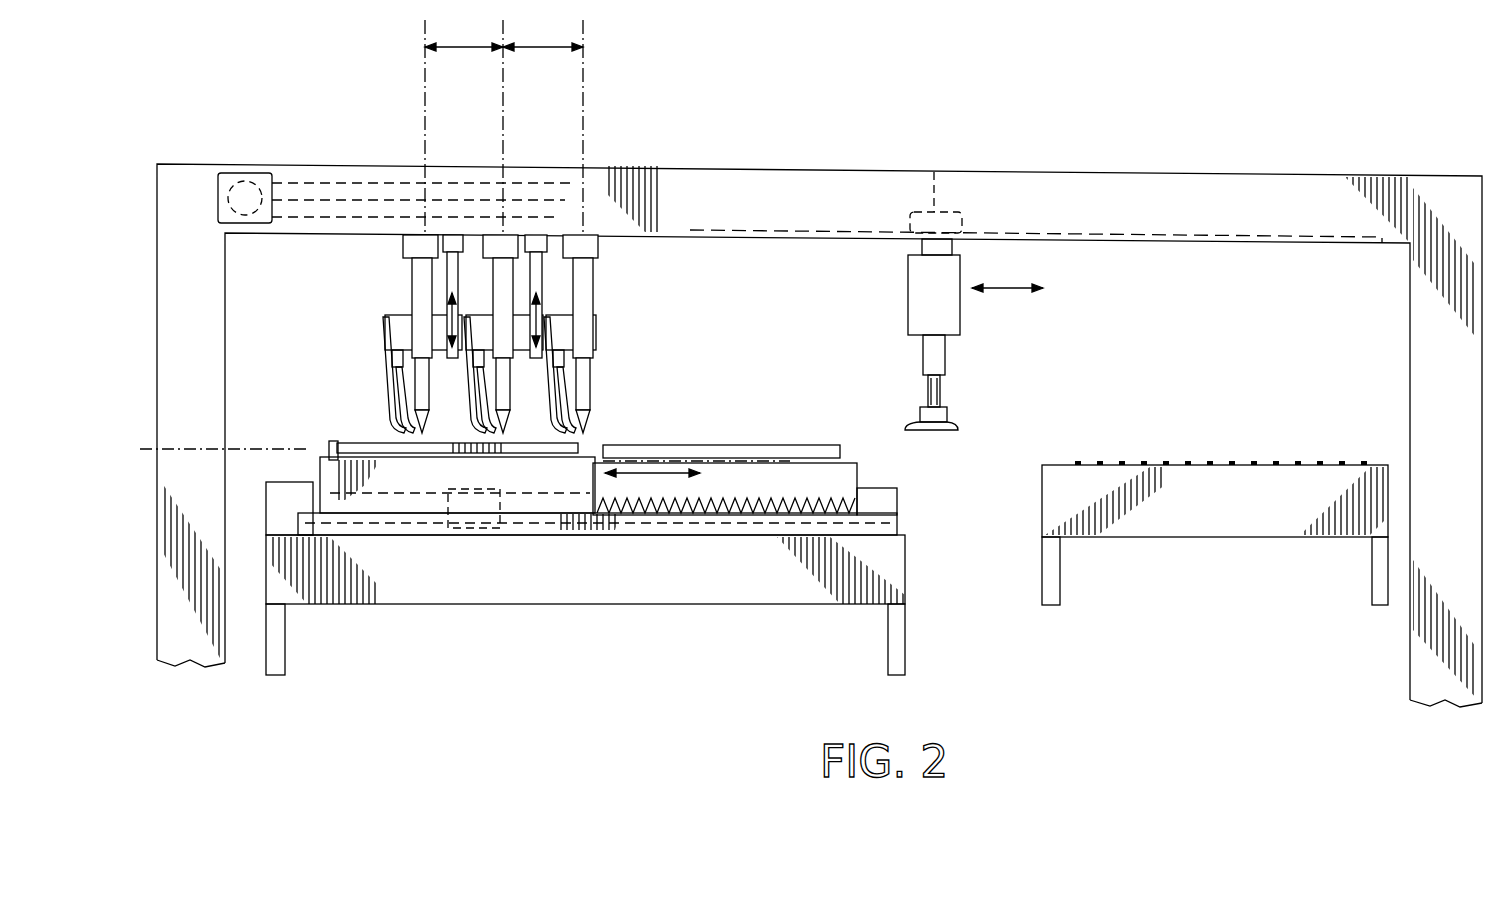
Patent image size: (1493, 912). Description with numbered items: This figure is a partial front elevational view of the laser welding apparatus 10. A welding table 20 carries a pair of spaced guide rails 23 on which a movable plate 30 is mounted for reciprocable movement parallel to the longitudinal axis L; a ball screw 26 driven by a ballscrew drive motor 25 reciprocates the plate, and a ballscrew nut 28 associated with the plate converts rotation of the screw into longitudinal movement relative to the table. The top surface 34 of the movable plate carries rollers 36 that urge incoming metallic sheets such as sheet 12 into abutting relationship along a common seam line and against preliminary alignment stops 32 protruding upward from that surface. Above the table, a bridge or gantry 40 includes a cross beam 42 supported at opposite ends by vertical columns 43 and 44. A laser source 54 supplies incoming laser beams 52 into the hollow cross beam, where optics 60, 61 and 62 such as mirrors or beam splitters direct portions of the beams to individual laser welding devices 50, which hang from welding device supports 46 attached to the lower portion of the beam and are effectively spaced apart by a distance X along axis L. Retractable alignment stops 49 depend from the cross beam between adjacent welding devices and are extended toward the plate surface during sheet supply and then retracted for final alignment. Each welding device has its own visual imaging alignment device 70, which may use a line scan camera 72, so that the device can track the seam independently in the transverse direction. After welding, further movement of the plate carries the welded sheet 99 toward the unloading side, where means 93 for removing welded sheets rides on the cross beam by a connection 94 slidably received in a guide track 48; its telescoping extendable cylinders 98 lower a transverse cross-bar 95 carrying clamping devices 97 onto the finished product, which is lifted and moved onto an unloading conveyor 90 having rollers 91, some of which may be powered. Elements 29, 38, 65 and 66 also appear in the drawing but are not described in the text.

The laser welding apparatus 10 is at (1048, 142).
The metallic sheet 12 is at (434, 458).
The welding table 20 is at (898, 562).
The guide rails 23 is at (400, 532).
The ballscrew drive motor 25 is at (288, 492).
The ball screw 26 is at (760, 496).
The ballscrew nut 28 is at (460, 532).
The end block 29 is at (876, 488).
The movable plate 30 is at (318, 446).
The preliminary alignment stops 32 is at (342, 447).
The top surface 34 is at (594, 452).
The rollers 36 is at (478, 456).
The working space 38 is at (625, 588).
The bridge or gantry 40 is at (1240, 168).
The cross beam 42 is at (1147, 188).
The vertical column 43 is at (1462, 394).
The vertical column 44 is at (200, 359).
The welding device supports 46 is at (499, 240).
The guide track 48 is at (1244, 242).
The retractable alignment stops 49 is at (532, 243).
The laser welding devices 50 is at (604, 300).
The incoming laser beams 52 is at (310, 160).
The laser source 54 is at (232, 172).
The reflecting mirror or beam splitter optic 60 is at (432, 228).
The reflecting mirror or beam splitter optic 61 is at (513, 213).
The reflecting mirror or beam splitter optic 62 is at (595, 200).
The suction tube 65 is at (596, 327).
The suction nozzle 66 is at (586, 421).
The visual imaging system or alignment device 70 is at (386, 392).
The line scan camera 72 is at (384, 348).
The unloading conveyor 90 is at (1258, 432).
The rollers 91 is at (1140, 462).
The means for removing welded sheets 93 is at (975, 330).
The connection 94 is at (934, 170).
The cross-bar 95 is at (947, 411).
The clamping devices 97 is at (935, 431).
The telescoping extendable cylinders 98 is at (933, 352).
The welded sheet 99 is at (808, 445).
The longitudinal axis L is at (172, 448).